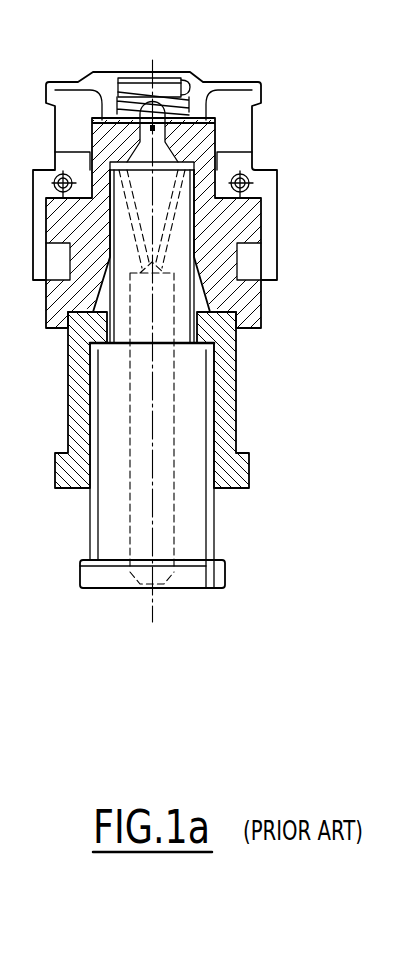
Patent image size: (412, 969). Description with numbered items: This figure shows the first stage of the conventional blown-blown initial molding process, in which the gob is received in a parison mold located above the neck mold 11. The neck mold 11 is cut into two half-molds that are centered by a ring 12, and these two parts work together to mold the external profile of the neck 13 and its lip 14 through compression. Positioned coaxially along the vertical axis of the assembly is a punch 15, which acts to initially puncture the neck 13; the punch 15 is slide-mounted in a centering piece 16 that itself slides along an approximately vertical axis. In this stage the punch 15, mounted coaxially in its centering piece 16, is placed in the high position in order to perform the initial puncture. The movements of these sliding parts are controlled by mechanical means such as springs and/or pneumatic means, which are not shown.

The neck mold 11 is at (237, 116).
The ring 12 is at (245, 217).
The neck 13 is at (192, 85).
The lip 14 is at (178, 150).
The punch 15 is at (190, 415).
The centering piece 16 is at (227, 437).